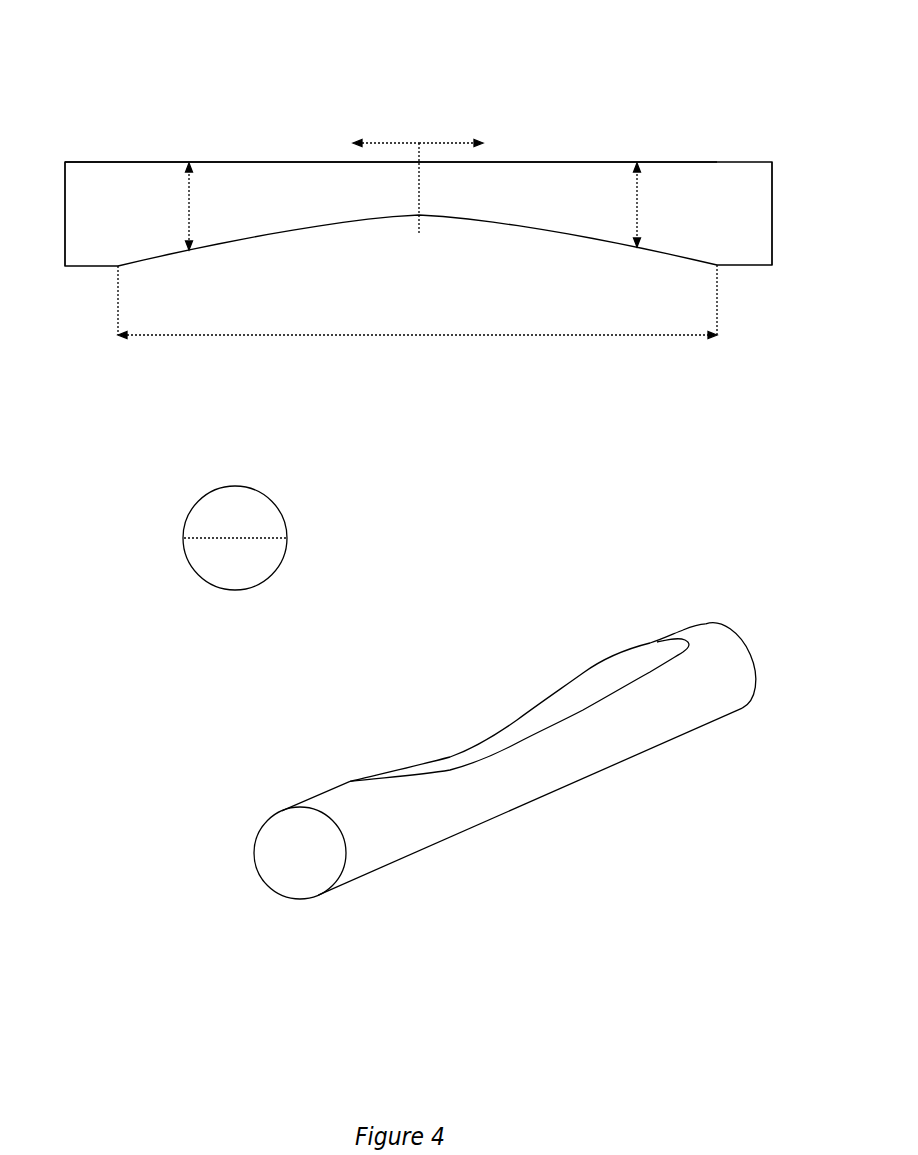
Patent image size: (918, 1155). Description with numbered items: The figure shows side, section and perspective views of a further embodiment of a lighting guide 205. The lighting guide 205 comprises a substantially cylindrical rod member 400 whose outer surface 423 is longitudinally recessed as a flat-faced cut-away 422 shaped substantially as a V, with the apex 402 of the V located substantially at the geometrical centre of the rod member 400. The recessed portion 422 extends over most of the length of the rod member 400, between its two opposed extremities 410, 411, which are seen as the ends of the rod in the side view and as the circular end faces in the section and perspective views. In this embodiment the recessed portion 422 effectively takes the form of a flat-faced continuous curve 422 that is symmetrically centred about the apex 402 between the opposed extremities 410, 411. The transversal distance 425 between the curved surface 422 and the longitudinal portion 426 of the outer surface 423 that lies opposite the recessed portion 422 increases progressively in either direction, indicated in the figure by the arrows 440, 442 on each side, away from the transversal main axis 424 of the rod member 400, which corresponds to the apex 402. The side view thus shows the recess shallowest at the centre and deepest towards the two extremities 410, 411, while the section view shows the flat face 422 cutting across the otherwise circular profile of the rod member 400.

The lighting guide 205 is at (163, 76).
The rod member 400 is at (722, 162).
The apex 402 is at (418, 216).
The extremity 410 is at (60, 213).
The extremity 411 is at (778, 213).
The flat-faced cut-away 422 is at (211, 335).
The outer surface 423 is at (90, 173).
The transversal main axis 424 is at (421, 193).
The transversal distance 425 is at (190, 187).
The longitudinal portion of the outer surface 426 is at (258, 153).
The first half width 440 is at (380, 143).
The second half width 442 is at (458, 143).